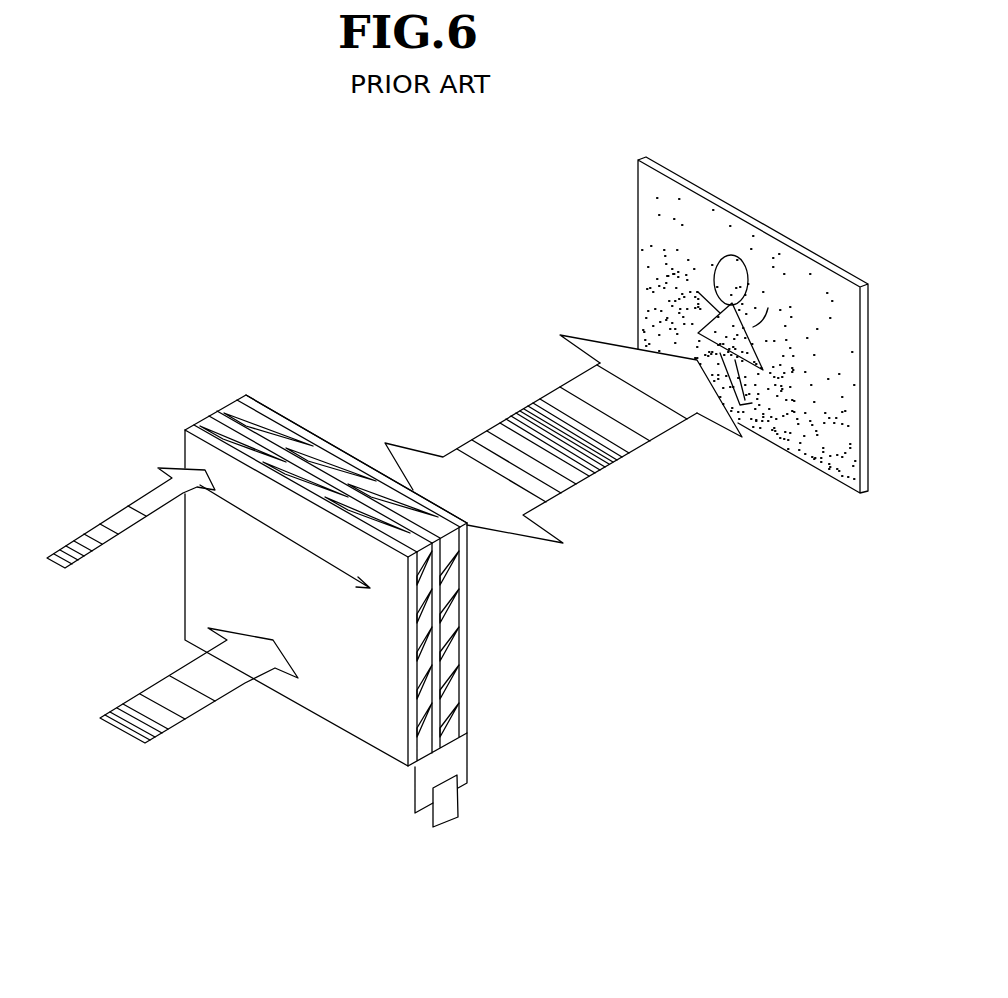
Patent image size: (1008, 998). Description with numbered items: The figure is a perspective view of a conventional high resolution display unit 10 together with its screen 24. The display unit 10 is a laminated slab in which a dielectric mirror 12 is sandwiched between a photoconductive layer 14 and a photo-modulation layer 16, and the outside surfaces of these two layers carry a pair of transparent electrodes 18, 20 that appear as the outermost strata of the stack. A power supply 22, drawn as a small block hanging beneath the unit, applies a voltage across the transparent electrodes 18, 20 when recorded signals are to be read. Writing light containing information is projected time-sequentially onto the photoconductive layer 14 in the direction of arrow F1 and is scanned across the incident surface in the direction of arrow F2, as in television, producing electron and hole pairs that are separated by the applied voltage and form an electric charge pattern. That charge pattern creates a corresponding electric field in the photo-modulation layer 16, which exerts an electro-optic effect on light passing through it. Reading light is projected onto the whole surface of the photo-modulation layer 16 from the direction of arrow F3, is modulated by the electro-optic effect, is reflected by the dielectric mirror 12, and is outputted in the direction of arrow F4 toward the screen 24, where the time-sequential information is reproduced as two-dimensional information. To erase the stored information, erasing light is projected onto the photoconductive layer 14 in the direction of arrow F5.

The display unit 10 is at (343, 416).
The dielectric mirror 12 is at (210, 417).
The photoconductive layer 14 is at (203, 417).
The photo-modulation layer 16 is at (232, 408).
The transparent electrode 18 is at (190, 450).
The transparent electrode 20 is at (252, 398).
The power supply 22 is at (443, 820).
The screen 24 is at (648, 205).
The arrow F1 is at (96, 531).
The arrow F2 is at (247, 523).
The arrow F3 is at (439, 467).
The arrow F4 is at (612, 363).
The arrow F5 is at (220, 688).